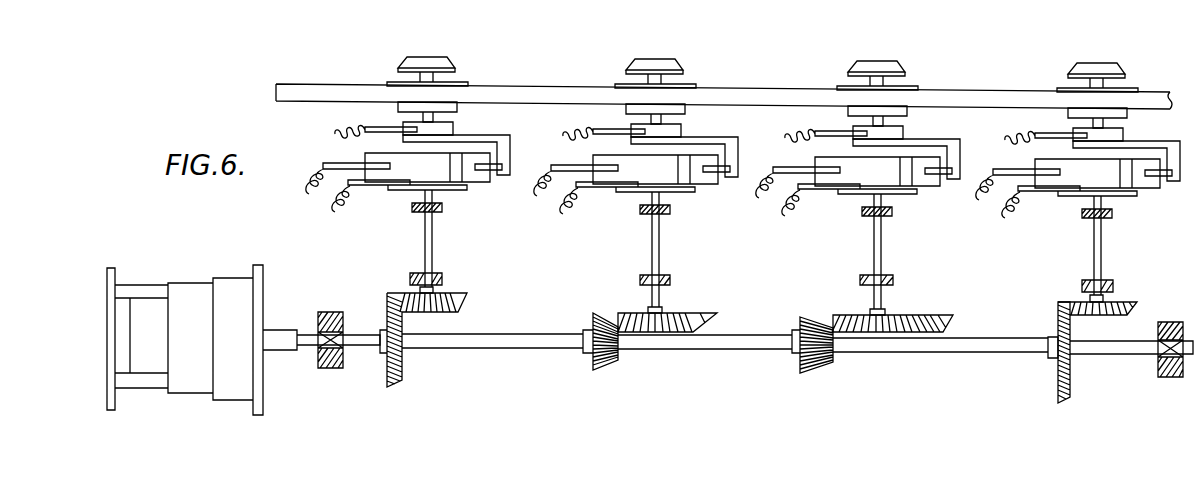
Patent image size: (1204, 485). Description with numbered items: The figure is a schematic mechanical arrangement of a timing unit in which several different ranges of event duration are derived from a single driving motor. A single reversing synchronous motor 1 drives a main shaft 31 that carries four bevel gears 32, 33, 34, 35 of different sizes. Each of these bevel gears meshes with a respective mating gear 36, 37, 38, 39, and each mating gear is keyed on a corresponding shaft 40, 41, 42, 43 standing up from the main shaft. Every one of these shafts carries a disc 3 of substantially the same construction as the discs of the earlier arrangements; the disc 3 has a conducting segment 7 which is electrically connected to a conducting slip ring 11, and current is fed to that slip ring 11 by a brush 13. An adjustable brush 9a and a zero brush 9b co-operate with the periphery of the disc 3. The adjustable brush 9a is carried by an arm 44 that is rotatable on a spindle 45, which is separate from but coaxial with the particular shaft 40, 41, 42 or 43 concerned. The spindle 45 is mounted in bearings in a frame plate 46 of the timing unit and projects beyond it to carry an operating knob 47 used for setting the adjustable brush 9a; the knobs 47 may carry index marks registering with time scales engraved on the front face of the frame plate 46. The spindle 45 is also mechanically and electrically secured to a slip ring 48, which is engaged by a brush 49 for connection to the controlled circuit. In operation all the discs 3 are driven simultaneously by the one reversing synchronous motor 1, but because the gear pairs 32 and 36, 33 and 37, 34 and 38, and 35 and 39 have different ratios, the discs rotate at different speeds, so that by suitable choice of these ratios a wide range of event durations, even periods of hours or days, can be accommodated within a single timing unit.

The reversing synchronous motor 1 is at (175, 349).
The disc 3 is at (752, 163).
The conducting segment 7 is at (800, 183).
The adjustable brush 9a is at (831, 186).
The zero brush 9b is at (679, 166).
The slip ring 11 is at (774, 213).
The brush 13 is at (734, 199).
The main shaft 31 is at (686, 350).
The bevel gear 32 is at (400, 383).
The bevel gear 33 is at (612, 366).
The bevel gear 34 is at (822, 370).
The bevel gear 35 is at (1071, 373).
The mating gear 36 is at (467, 297).
The mating gear 37 is at (692, 313).
The mating gear 38 is at (932, 316).
The mating gear 39 is at (1137, 313).
The shaft 40 is at (433, 239).
The shaft 41 is at (660, 244).
The shaft 42 is at (882, 246).
The shaft 43 is at (1102, 251).
The arm 44 is at (801, 147).
The spindle 45 is at (742, 92).
The frame plate 46 is at (766, 93).
The operating knob 47 is at (762, 57).
The slip ring 48 is at (781, 124).
The brush 49 is at (710, 124).